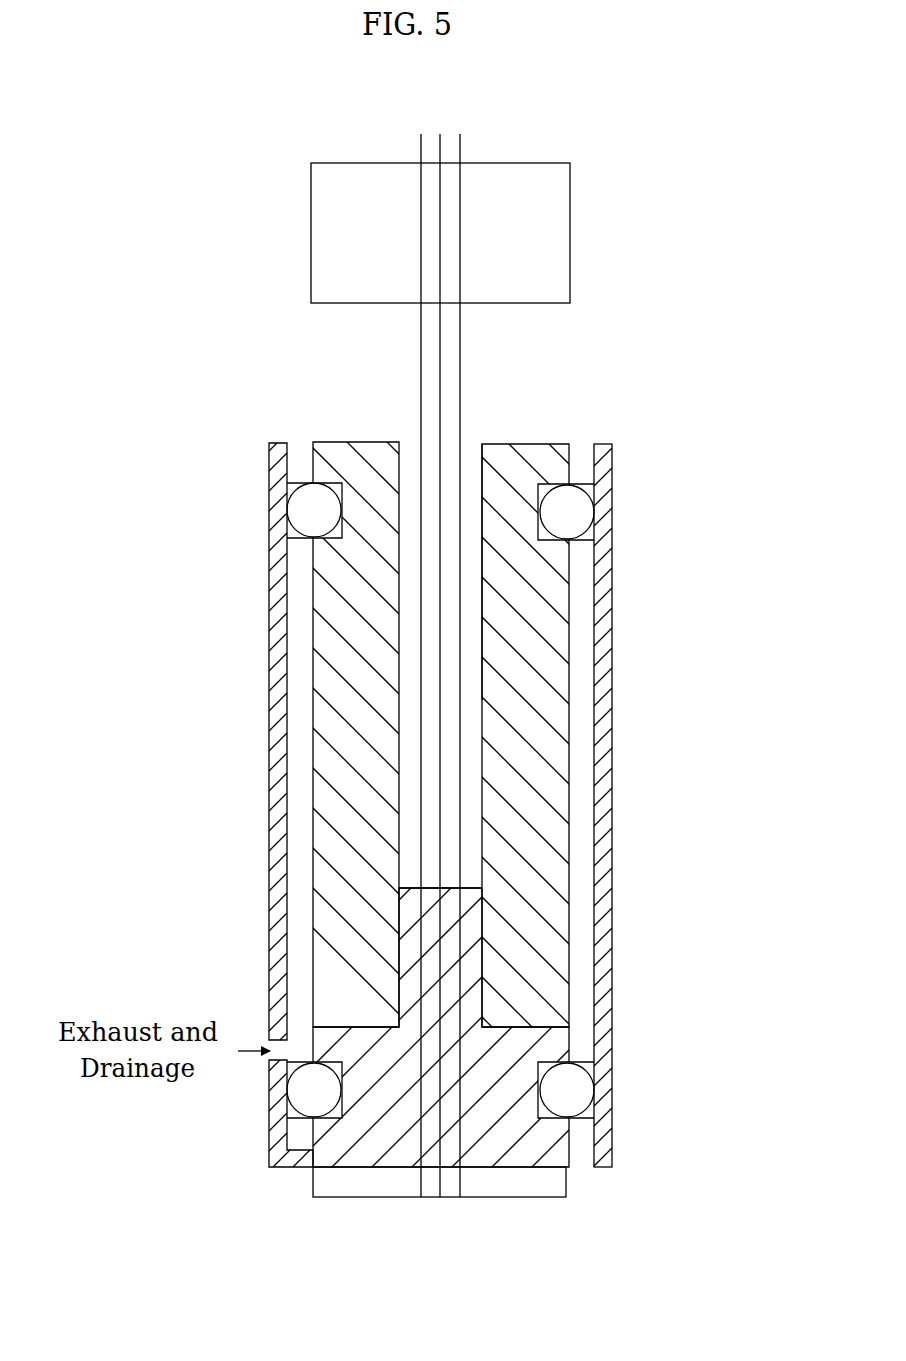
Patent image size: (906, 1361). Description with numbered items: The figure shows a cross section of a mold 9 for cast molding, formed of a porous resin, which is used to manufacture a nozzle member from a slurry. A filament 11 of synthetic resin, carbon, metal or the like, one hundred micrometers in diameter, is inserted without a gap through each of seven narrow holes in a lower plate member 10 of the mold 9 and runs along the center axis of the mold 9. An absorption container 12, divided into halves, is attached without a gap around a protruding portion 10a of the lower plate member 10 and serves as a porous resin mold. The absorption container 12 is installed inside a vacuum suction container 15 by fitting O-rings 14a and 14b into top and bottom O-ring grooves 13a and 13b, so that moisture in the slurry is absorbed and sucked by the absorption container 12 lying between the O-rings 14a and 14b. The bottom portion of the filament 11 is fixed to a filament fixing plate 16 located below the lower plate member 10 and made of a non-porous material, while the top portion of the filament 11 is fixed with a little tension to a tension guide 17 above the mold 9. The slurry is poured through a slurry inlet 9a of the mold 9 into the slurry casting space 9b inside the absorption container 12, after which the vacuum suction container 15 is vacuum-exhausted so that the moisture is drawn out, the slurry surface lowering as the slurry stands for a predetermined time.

The mold 9 is at (333, 440).
The slurry inlet 9a is at (468, 450).
The slurry casting space 9b is at (470, 603).
The lower plate member 10 is at (546, 1145).
The protruding portion 10a is at (473, 912).
The filament 11 is at (460, 154).
The absorption container 12 is at (566, 697).
The top O-ring groove 13a is at (543, 540).
The bottom O-ring groove 13b is at (555, 1118).
The top O-ring 14a is at (580, 513).
The bottom O-ring 14b is at (575, 1070).
The vacuum suction container 15 is at (612, 805).
The filament fixing plate 16 is at (535, 1188).
The tension guide 17 is at (570, 235).